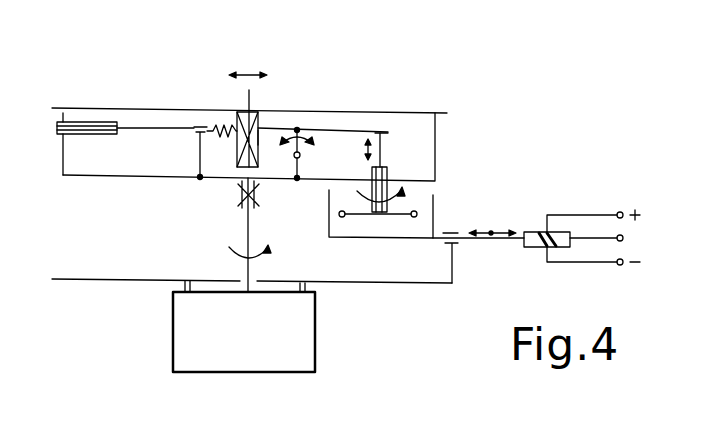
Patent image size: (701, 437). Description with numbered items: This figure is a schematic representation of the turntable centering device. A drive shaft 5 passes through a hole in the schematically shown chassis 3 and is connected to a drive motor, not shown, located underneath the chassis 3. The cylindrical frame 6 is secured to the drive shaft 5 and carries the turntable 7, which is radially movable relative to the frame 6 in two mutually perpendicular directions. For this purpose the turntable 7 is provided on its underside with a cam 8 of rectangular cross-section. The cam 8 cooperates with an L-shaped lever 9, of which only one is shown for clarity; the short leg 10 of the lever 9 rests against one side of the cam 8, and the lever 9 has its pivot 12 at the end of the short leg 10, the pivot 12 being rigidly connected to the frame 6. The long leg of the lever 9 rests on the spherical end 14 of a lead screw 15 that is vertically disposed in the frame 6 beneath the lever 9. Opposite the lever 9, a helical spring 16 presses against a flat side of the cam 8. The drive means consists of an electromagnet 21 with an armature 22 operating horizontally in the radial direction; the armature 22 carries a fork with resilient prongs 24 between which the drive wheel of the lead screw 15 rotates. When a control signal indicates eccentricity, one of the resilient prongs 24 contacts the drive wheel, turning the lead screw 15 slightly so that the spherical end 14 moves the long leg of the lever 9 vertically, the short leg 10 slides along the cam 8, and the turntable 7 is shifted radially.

The chassis 3 is at (127, 281).
The drive shaft 5 is at (248, 219).
The frame 6 is at (63, 152).
The turntable 7 is at (98, 108).
The cam 8 is at (252, 114).
The lever 9 is at (314, 128).
The short leg 10 is at (262, 137).
The pivot 12 is at (301, 156).
The spherical end 14 is at (388, 132).
The lead screw 15 is at (388, 173).
The helical spring 16 is at (230, 130).
The electromagnet 21 is at (539, 248).
The armature 22 is at (493, 243).
The resilient prongs 24 is at (328, 211).